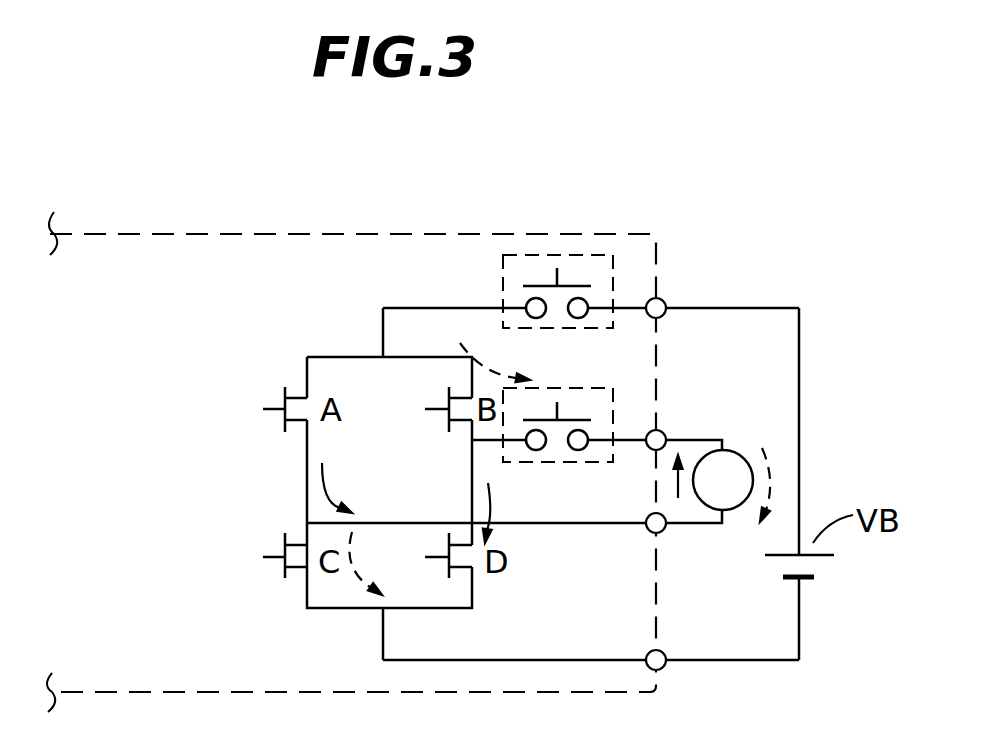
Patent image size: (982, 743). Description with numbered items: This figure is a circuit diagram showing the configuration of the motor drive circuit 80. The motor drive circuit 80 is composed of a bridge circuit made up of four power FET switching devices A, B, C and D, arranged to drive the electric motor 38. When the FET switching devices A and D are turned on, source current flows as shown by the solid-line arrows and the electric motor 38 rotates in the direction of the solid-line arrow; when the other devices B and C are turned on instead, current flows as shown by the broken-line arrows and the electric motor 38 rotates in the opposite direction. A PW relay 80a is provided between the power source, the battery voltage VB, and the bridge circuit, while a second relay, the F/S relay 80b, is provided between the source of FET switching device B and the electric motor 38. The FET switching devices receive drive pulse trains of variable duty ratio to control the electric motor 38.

The motor drive circuit 80 is at (447, 234).
The PW relay 80a is at (503, 285).
The F/S relay 80b is at (527, 463).
The electric motor 38 is at (738, 510).